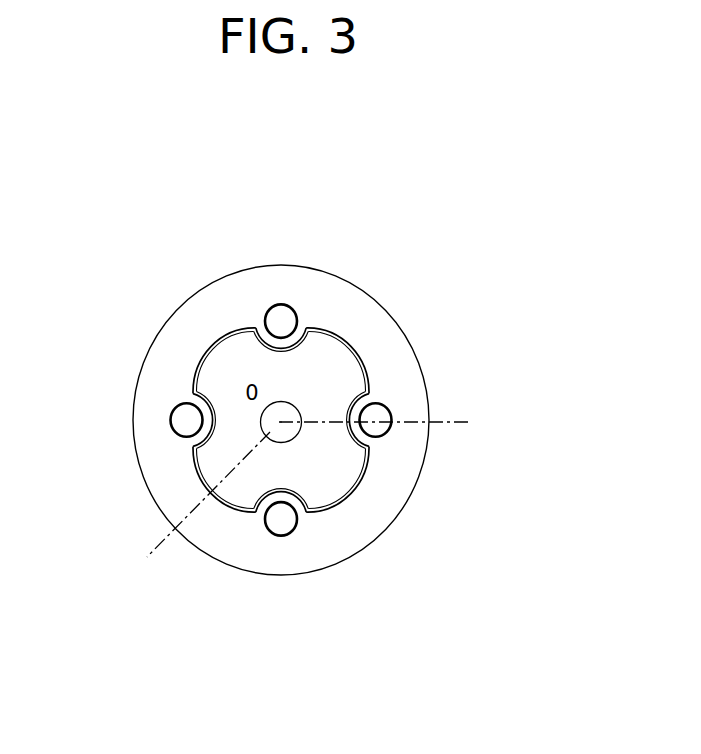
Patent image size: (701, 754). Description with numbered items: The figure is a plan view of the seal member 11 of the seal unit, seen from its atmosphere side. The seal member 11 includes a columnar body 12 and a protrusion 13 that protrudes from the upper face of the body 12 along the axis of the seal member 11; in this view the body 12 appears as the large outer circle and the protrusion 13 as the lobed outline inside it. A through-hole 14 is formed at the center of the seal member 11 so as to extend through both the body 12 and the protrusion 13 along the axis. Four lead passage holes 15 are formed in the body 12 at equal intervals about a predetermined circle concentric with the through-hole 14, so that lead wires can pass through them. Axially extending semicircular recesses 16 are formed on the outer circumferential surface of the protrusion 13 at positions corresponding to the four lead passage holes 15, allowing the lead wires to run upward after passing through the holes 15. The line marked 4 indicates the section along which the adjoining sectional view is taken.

The section line IV-IV 4 is at (317, 502).
The seal member 11 is at (423, 240).
The body 12 is at (186, 283).
The protrusion 13 is at (346, 511).
The through-hole 14 is at (299, 413).
The lead passage holes 15 is at (287, 323).
The semicircular recesses 16 is at (259, 327).